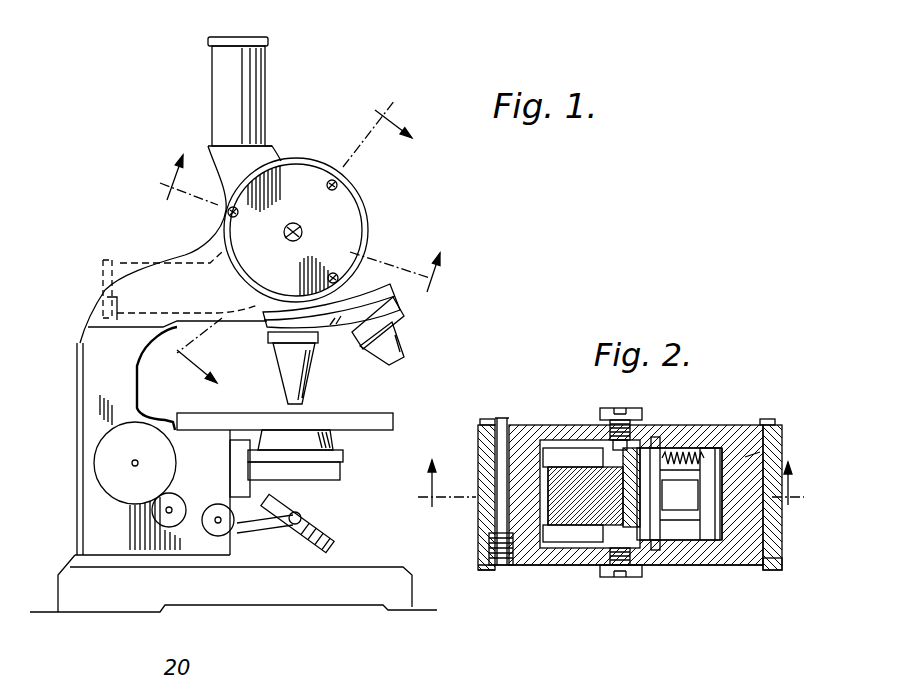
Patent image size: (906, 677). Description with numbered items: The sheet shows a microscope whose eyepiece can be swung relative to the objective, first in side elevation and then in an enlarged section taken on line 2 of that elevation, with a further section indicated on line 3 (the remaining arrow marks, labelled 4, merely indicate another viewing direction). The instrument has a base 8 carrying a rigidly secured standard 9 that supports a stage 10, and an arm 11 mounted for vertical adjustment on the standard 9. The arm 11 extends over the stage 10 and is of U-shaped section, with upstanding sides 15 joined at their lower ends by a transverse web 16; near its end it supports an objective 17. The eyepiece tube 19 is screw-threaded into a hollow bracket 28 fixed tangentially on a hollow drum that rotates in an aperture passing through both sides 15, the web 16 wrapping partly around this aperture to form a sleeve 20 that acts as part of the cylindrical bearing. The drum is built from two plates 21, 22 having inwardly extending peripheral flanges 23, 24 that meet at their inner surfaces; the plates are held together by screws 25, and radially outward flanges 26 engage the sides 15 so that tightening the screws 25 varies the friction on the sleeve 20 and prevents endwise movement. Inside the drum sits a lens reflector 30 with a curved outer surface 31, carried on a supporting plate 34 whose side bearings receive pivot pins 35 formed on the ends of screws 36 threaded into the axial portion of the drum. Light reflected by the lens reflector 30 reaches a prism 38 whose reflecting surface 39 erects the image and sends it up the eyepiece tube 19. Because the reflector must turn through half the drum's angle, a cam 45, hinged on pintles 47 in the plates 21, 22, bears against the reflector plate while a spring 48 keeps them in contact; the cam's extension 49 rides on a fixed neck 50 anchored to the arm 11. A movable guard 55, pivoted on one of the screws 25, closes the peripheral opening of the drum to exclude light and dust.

In FIG. 1, the section line 2— 2 is at (297, 229).
In FIG. 1, the section line 3— 3 is at (288, 236).
In FIG. 2, the section line 4- 4 is at (604, 497).
In FIG. 1, the base 8 is at (193, 594).
In FIG. 1, the standard 9 is at (92, 404).
In FIG. 1, the stage 10 is at (388, 420).
In FIG. 1, the arm 11 is at (107, 297).
In FIG. 1, the sides 15 is at (192, 253).
In FIG. 2, the sides 15 is at (478, 432).
In FIG. 1, the transverse web 16 is at (222, 327).
In FIG. 1, the objective 17 is at (373, 350).
In FIG. 1, the eyepiece tube 19 is at (250, 60).
In FIG. 1, the sleeve 20 is at (368, 207).
In FIG. 2, the sleeve 20 is at (774, 440).
In FIG. 2, the plate 21 is at (708, 422).
In FIG. 2, the plate 22 is at (716, 567).
In FIG. 2, the peripheral flange 23 is at (760, 452).
In FIG. 2, the peripheral flange 24 is at (777, 548).
In FIG. 1, the screws 25 is at (338, 186).
In FIG. 2, the screws 25 is at (502, 420).
In FIG. 1, the flanges 26 is at (235, 276).
In FIG. 2, the flanges 26 is at (488, 418).
In FIG. 1, the bracket 28 is at (245, 157).
In FIG. 2, the bracket 28 is at (480, 470).
In FIG. 2, the lens reflector 30 is at (588, 524).
In FIG. 2, the outer surface 31 is at (548, 525).
In FIG. 2, the supporting plate 34 is at (614, 540).
In FIG. 2, the pivot pins 35 is at (615, 453).
In FIG. 1, the screws 36 is at (298, 223).
In FIG. 2, the screws 36 is at (612, 408).
In FIG. 2, the prism 38 is at (547, 468).
In FIG. 2, the reflecting surface 39 is at (573, 458).
In FIG. 2, the cam 45 is at (680, 495).
In FIG. 2, the hinge pintles 47 is at (655, 440).
In FIG. 2, the spring 48 is at (677, 452).
In FIG. 2, the arm extension 49 is at (685, 540).
In FIG. 2, the fixed neck 50 is at (702, 455).
In FIG. 2, the movable guard 55 is at (489, 534).